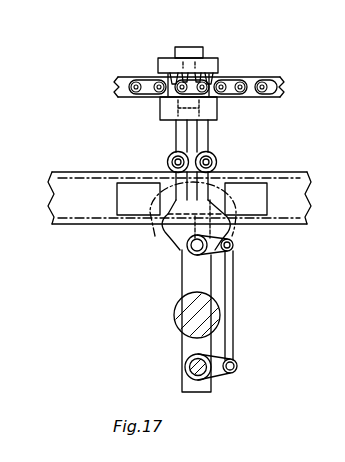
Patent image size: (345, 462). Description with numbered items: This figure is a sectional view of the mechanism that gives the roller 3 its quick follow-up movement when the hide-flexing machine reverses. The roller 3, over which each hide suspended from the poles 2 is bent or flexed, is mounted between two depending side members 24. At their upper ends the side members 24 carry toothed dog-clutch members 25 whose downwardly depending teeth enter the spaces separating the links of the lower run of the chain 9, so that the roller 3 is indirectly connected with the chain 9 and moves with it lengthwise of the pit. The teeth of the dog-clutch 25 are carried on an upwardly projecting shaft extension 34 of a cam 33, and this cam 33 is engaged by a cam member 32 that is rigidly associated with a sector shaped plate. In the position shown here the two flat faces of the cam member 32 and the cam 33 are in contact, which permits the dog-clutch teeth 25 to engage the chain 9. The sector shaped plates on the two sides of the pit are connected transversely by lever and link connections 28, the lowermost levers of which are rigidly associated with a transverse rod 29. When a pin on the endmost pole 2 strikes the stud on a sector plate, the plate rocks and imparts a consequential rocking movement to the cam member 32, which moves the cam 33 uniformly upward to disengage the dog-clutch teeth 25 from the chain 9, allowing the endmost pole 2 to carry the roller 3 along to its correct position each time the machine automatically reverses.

The pole 2 is at (256, 190).
The roller 3 is at (175, 323).
The chain 9 is at (117, 90).
The depending side member 24 is at (188, 287).
The toothed dog-clutch member 25 is at (172, 78).
The lever and link connection 28 is at (234, 268).
The transverse rod 29 is at (184, 365).
The cam member 32 is at (178, 240).
The cam 33 is at (170, 232).
The shaft extension 34 is at (190, 133).